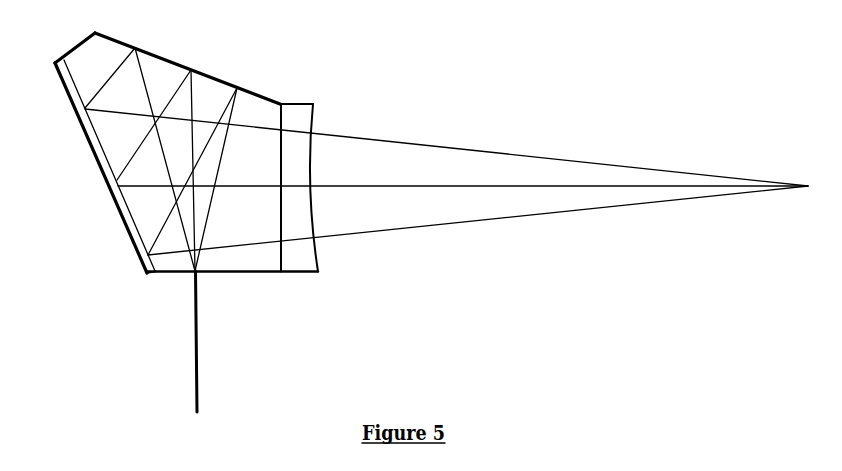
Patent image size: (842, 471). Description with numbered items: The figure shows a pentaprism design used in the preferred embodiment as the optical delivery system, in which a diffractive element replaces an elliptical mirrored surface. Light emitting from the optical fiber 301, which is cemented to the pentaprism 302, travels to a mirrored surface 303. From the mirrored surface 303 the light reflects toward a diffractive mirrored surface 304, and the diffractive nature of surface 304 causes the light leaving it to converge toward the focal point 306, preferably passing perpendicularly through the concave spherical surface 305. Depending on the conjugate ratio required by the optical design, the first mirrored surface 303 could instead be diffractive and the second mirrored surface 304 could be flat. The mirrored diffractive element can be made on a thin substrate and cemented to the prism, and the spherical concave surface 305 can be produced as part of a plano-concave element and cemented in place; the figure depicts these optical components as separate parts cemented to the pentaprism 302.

The optical fiber 301 is at (200, 388).
The pentaprism 302 is at (186, 152).
The mirrored surface 303 is at (212, 75).
The diffractive mirrored surface 304 is at (112, 197).
The concave spherical surface 305 is at (309, 187).
The focal point 306 is at (456, 182).